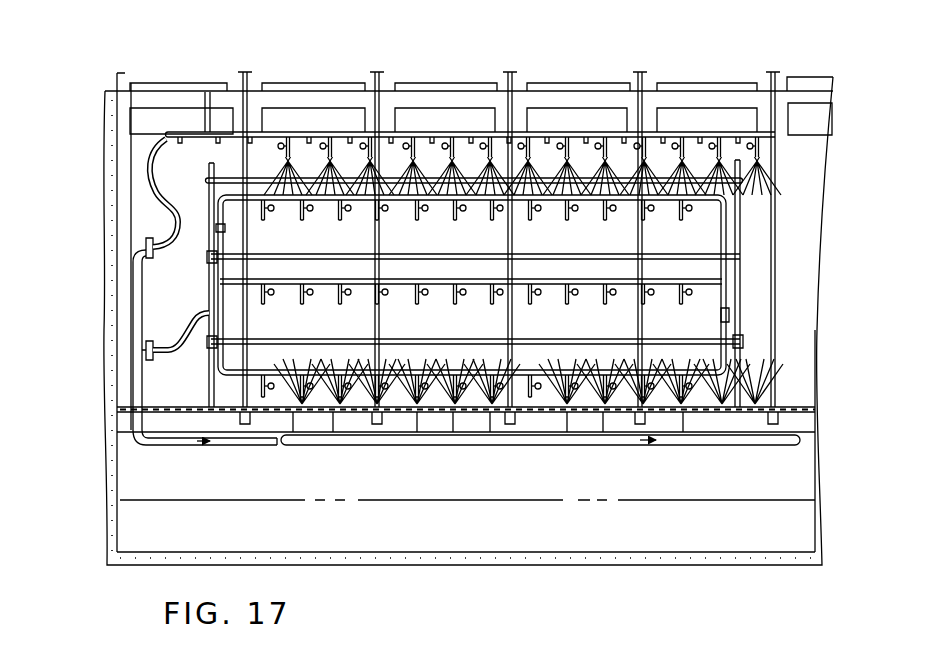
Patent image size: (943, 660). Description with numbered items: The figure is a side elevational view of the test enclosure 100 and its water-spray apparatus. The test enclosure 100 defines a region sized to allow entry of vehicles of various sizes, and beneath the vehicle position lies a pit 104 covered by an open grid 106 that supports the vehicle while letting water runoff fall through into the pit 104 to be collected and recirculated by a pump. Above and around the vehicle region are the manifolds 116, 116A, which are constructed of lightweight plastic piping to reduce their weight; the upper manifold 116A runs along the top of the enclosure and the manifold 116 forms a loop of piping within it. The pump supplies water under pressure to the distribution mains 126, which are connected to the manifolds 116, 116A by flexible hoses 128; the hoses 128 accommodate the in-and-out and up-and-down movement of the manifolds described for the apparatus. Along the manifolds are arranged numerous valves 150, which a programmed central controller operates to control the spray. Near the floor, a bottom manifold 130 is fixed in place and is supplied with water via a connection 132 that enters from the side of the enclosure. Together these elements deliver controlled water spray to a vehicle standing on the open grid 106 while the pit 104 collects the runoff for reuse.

The test enclosure 100 is at (676, 74).
The pit 104 is at (662, 533).
The open grid 106 is at (235, 436).
The manifold 116 is at (221, 197).
The manifold 116A is at (188, 132).
The distribution main 126 is at (144, 303).
The flexible hose 128 is at (167, 207).
The bottom manifold 130 is at (391, 450).
The connection 132 is at (160, 449).
The valve 150 is at (541, 147).